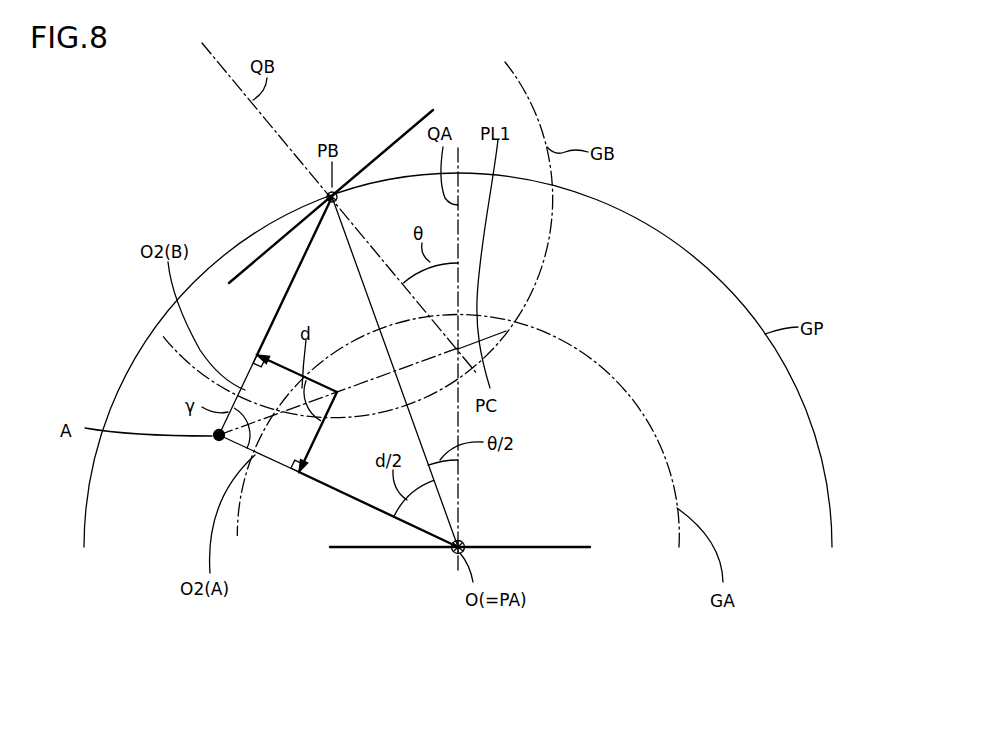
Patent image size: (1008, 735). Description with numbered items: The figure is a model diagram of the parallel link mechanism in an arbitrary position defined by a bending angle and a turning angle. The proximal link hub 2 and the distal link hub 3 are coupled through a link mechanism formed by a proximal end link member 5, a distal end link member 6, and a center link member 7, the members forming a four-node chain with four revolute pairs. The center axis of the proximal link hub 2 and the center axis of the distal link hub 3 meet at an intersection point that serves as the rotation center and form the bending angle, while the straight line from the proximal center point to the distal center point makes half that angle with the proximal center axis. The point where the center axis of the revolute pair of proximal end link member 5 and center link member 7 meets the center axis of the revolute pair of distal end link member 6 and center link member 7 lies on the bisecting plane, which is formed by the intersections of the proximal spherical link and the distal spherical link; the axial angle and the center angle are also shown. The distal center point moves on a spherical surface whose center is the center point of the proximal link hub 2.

The proximal link hub 2 is at (567, 549).
The distal link hub 3 is at (395, 142).
The proximal end link member 5 is at (353, 503).
The distal end link member 6 is at (303, 255).
The center link member 7 is at (311, 444).